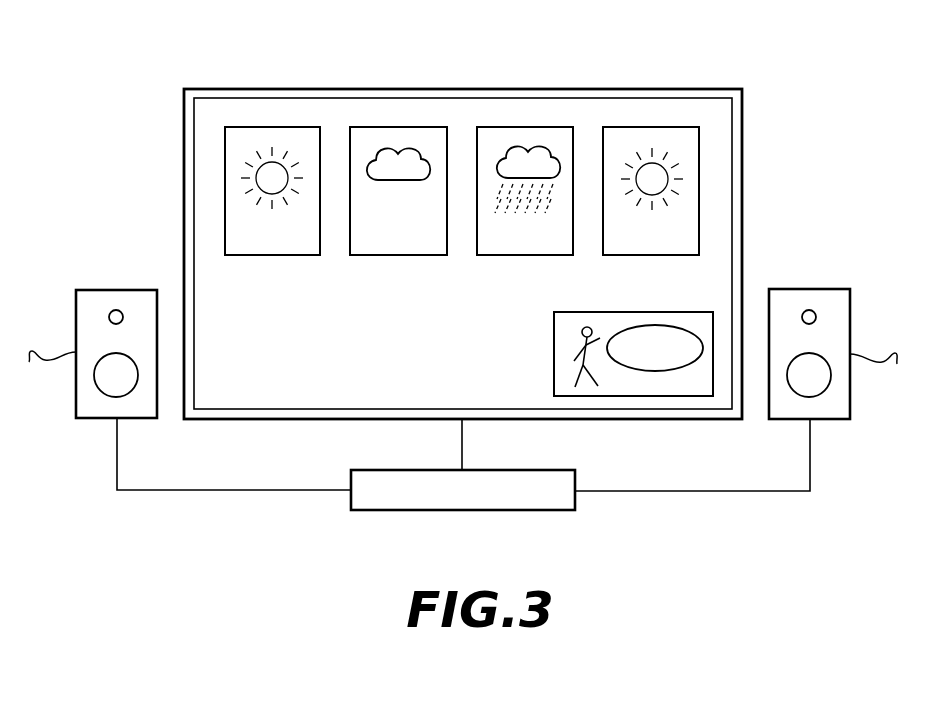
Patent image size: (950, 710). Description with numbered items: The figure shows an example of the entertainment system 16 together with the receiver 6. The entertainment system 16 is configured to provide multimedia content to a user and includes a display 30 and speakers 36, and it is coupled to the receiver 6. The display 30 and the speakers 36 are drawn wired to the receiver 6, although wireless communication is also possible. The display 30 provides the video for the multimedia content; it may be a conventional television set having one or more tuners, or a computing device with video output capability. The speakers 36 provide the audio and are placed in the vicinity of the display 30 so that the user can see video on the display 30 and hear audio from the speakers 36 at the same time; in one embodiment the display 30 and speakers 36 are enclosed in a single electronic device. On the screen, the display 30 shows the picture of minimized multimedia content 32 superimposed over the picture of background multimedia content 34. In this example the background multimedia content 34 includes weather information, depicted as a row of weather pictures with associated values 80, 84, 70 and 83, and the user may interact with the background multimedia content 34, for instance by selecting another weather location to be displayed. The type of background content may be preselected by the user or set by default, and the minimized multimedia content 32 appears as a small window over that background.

The entertainment system 16 is at (827, 46).
The display 30 is at (710, 88).
The background multimedia content 34 is at (716, 119).
The speakers 36 is at (818, 289).
The minimized multimedia content 32 is at (683, 385).
The receiver 6 is at (384, 511).
The weather forecast icon (sunny) 80 is at (272, 211).
The weather forecast icon (cloudy) 84 is at (398, 211).
The weather forecast icon (rain) 70 is at (525, 211).
The weather forecast icon (sunny) 83 is at (651, 211).